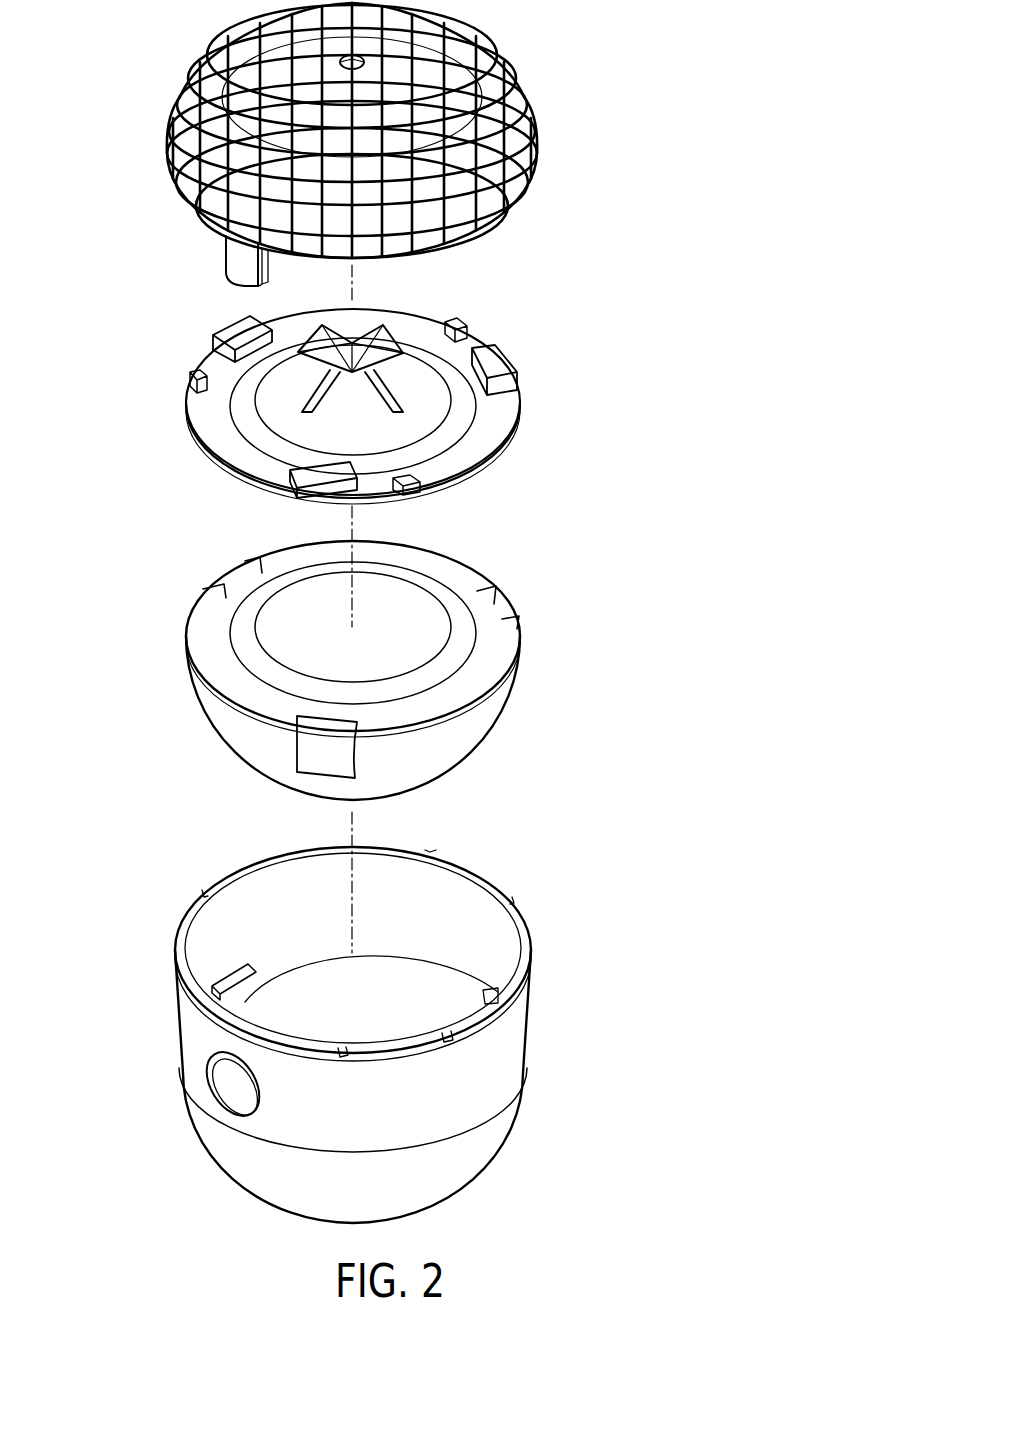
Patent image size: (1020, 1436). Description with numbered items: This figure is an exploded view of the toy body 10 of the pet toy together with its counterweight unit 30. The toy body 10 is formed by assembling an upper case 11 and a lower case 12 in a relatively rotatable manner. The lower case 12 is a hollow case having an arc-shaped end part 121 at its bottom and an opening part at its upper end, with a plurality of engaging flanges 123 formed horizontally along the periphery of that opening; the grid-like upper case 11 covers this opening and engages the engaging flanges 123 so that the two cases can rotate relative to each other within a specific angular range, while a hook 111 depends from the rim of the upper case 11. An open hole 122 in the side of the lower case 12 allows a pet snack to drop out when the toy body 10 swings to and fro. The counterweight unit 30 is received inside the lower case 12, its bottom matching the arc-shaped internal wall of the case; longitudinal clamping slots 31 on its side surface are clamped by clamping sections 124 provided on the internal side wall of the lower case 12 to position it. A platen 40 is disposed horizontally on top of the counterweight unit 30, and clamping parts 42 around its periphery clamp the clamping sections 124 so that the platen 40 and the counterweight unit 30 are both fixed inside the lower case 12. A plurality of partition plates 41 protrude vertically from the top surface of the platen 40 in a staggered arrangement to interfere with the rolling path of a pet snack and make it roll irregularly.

The toy body 10 is at (562, 236).
The upper case 11 is at (492, 60).
The hook 111 is at (238, 257).
The lower case 12 is at (520, 1023).
The arc-shaped end part 121 is at (487, 1140).
The open hole 122 is at (207, 1080).
The engaging flanges 123 is at (517, 920).
The clamping sections 124 is at (245, 975).
The counterweight unit 30 is at (483, 722).
The clamping slots 31 is at (318, 745).
The platen 40 is at (487, 443).
The partition plates 41 is at (385, 343).
The clamping parts 42 is at (494, 360).